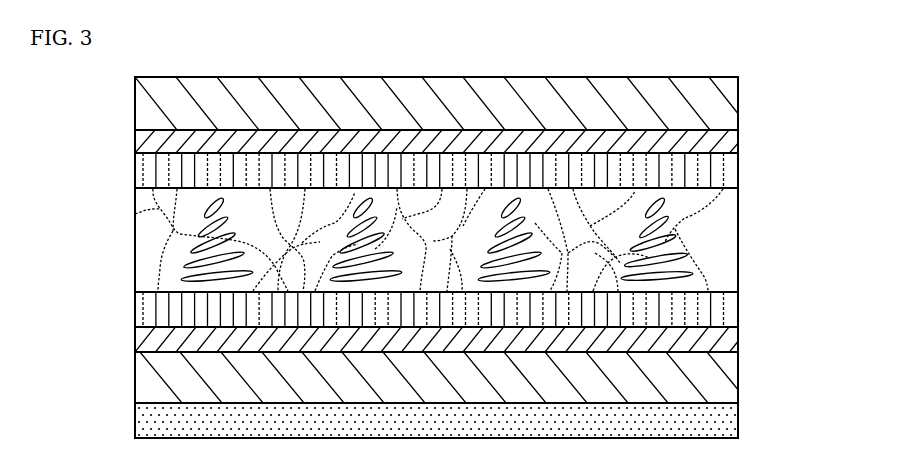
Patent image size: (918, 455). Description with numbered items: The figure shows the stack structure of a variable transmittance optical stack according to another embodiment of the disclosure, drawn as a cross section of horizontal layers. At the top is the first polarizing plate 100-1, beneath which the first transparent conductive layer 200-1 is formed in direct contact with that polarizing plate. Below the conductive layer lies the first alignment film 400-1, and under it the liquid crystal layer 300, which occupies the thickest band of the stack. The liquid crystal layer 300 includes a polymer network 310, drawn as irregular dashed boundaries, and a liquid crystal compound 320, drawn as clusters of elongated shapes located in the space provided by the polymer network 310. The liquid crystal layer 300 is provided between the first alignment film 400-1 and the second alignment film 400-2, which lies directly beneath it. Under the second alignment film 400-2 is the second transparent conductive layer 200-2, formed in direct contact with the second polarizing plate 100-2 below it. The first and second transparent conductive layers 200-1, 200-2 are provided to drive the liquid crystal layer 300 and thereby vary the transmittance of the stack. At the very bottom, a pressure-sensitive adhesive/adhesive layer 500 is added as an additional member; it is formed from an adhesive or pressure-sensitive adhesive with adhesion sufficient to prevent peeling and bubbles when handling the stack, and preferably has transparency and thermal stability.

The first polarizing plate 100-1 is at (740, 101).
The first transparent conductive layer 200-1 is at (740, 141).
The first alignment film 400-1 is at (740, 172).
The liquid crystal layer 300 is at (740, 237).
The polymer network 310 is at (136, 214).
The liquid crystal compound 320 is at (158, 287).
The second alignment film 400-2 is at (740, 307).
The second transparent conductive layer 200-2 is at (740, 338).
The second polarizing plate 100-2 is at (740, 377).
The pressure-sensitive adhesive/adhesive layer 500 is at (740, 420).